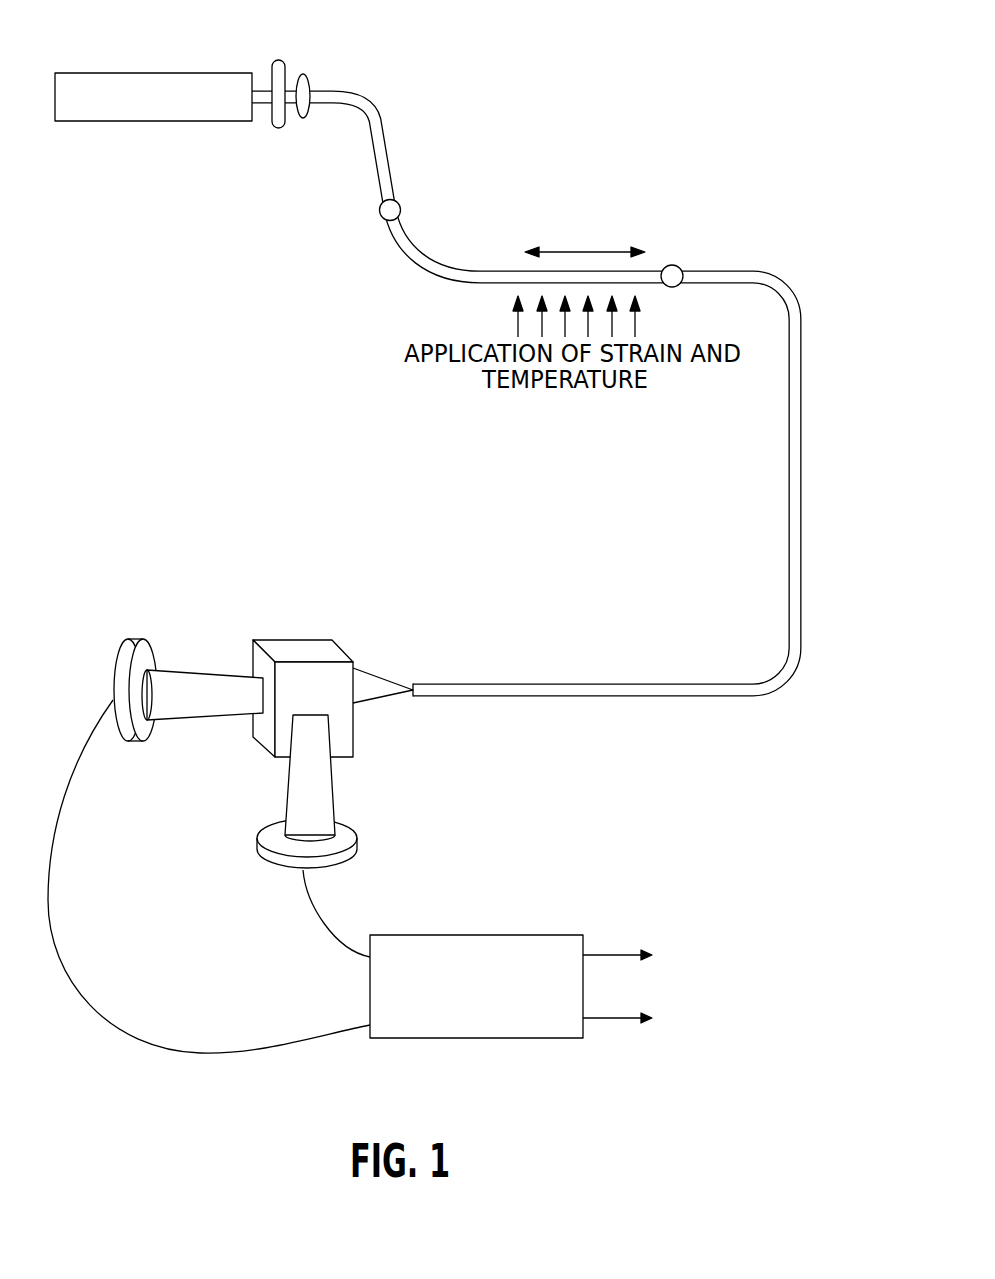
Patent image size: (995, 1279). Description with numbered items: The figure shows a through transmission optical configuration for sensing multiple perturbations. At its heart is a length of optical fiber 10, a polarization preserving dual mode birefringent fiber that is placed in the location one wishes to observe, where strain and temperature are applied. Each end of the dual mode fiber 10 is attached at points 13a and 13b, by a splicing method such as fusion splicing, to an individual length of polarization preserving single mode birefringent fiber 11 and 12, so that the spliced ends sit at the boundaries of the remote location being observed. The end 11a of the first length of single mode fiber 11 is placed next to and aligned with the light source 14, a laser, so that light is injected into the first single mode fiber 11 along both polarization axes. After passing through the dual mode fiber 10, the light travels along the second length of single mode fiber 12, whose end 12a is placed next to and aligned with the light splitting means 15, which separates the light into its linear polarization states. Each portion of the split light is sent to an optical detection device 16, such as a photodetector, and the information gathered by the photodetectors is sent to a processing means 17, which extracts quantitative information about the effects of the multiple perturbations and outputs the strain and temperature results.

The optical fiber 10 is at (458, 260).
The first length of single mode fiber 11 is at (367, 107).
The end of the first length of single mode fiber 11a is at (266, 104).
The second length of single mode fiber 12 is at (780, 277).
The end of the second length of single mode fiber 12a is at (430, 698).
The splice point 13a is at (399, 203).
The splice point 13b is at (671, 265).
The light source 14 is at (110, 73).
The light splitting means 15 is at (343, 652).
The optical detection device 16 is at (170, 662).
The processing means 17 is at (513, 935).